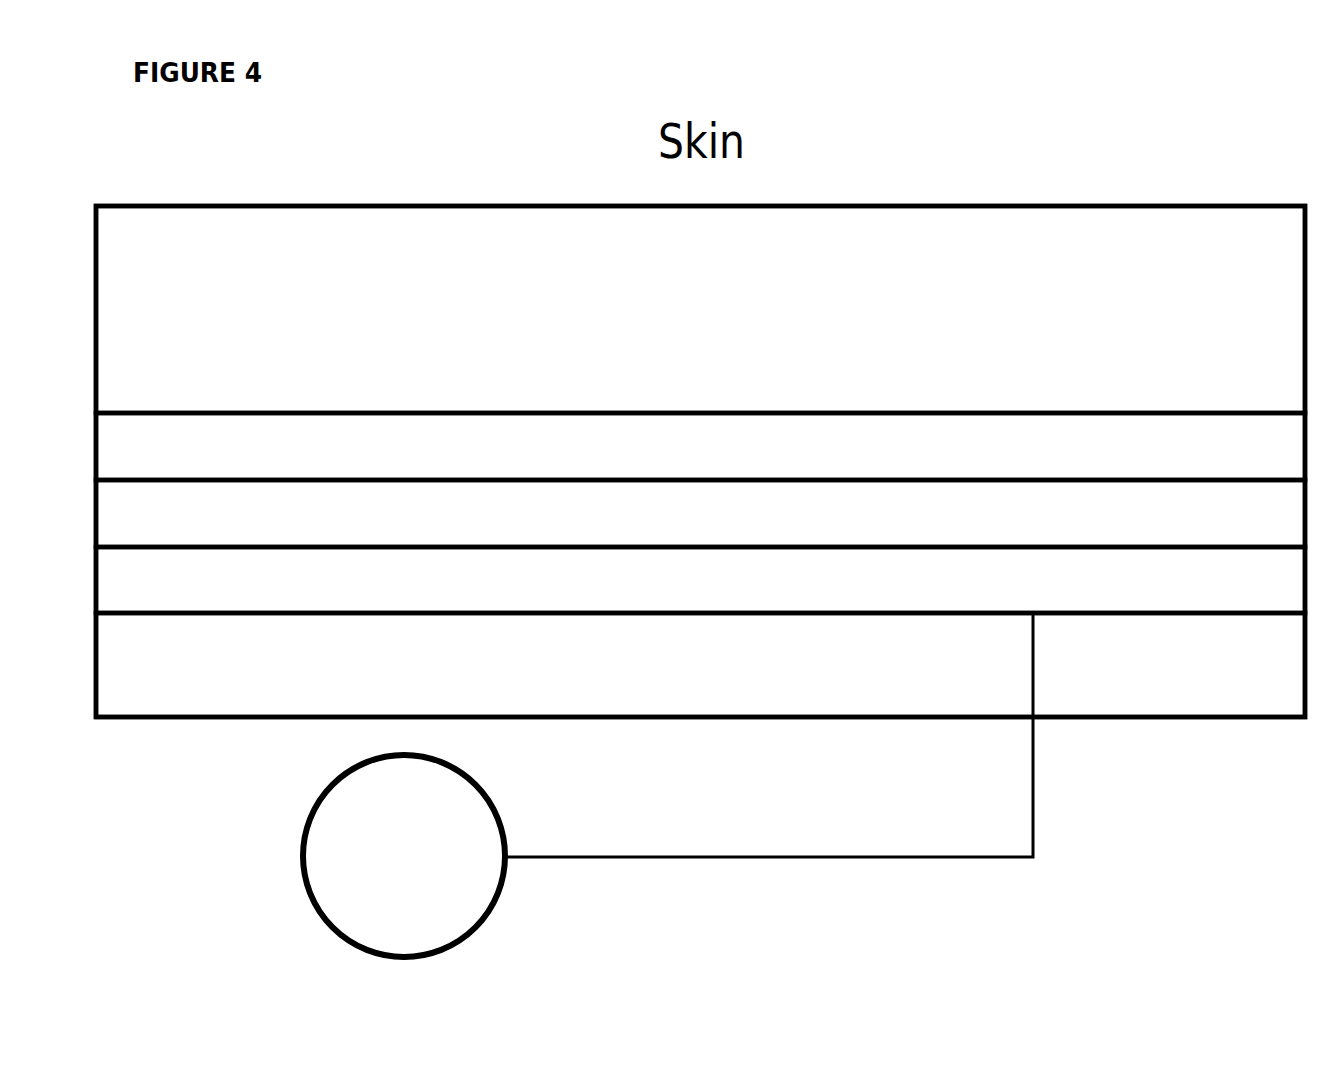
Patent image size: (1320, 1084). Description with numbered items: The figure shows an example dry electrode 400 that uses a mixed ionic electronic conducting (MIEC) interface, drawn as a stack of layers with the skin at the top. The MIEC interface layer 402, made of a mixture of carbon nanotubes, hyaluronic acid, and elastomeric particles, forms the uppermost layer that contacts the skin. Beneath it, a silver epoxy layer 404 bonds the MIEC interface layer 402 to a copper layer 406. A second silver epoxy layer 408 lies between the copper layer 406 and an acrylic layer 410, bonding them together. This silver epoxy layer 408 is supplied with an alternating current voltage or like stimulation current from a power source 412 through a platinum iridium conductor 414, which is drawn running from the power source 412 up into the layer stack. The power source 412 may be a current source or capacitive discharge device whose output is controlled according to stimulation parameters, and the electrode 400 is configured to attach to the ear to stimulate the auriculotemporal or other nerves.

The electrode 400 is at (1108, 163).
The MIEC interface layer 402 is at (266, 342).
The silver epoxy layer 404 is at (266, 462).
The copper layer 406 is at (266, 528).
The silver epoxy layer 408 is at (266, 595).
The acrylic layer 410 is at (266, 678).
The power source 412 is at (322, 873).
The platinum iridium conductor 414 is at (1033, 803).